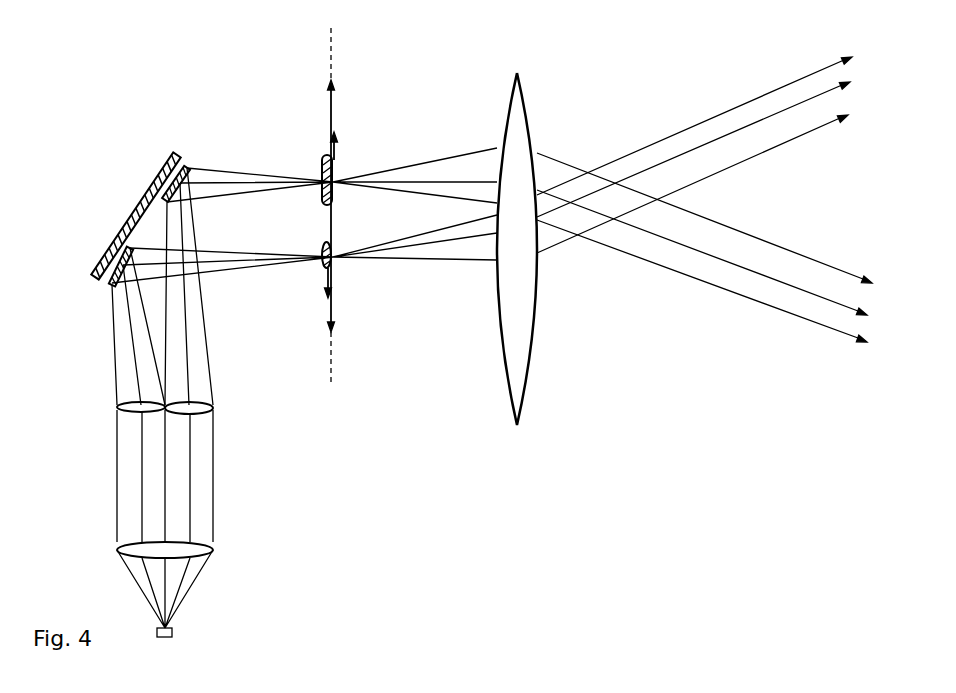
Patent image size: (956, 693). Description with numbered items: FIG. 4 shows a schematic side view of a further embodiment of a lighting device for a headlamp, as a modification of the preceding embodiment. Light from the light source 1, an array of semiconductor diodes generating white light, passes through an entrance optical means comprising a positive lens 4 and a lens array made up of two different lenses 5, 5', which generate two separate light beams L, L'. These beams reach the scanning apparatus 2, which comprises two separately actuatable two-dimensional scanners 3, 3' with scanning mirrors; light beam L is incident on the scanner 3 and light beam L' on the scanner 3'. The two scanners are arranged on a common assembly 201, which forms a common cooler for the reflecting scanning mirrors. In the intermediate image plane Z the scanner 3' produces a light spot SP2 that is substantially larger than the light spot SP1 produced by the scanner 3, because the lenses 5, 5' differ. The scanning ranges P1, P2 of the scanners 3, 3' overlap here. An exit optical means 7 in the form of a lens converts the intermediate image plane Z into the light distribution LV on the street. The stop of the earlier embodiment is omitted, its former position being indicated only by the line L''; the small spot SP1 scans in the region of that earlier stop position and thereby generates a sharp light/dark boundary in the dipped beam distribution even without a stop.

The light source 1 is at (173, 632).
The scanning apparatus 2 is at (161, 110).
The common assembly 201 is at (93, 279).
The scanner 3 is at (209, 294).
The scanner 3' is at (247, 166).
The positive lens 4 is at (212, 550).
The lens 5 is at (116, 339).
The lens 5' is at (216, 298).
The exit optical means 7 is at (528, 87).
The light spot SP1 is at (322, 265).
The light spot SP2 is at (322, 157).
The scanning range P1 is at (327, 305).
The scanning range P2 is at (334, 109).
The light beam L is at (91, 387).
The light beam L' is at (234, 377).
The line indicating stop position L'' is at (304, 211).
The intermediate image plane Z is at (328, 197).
The light distribution LV is at (704, 199).